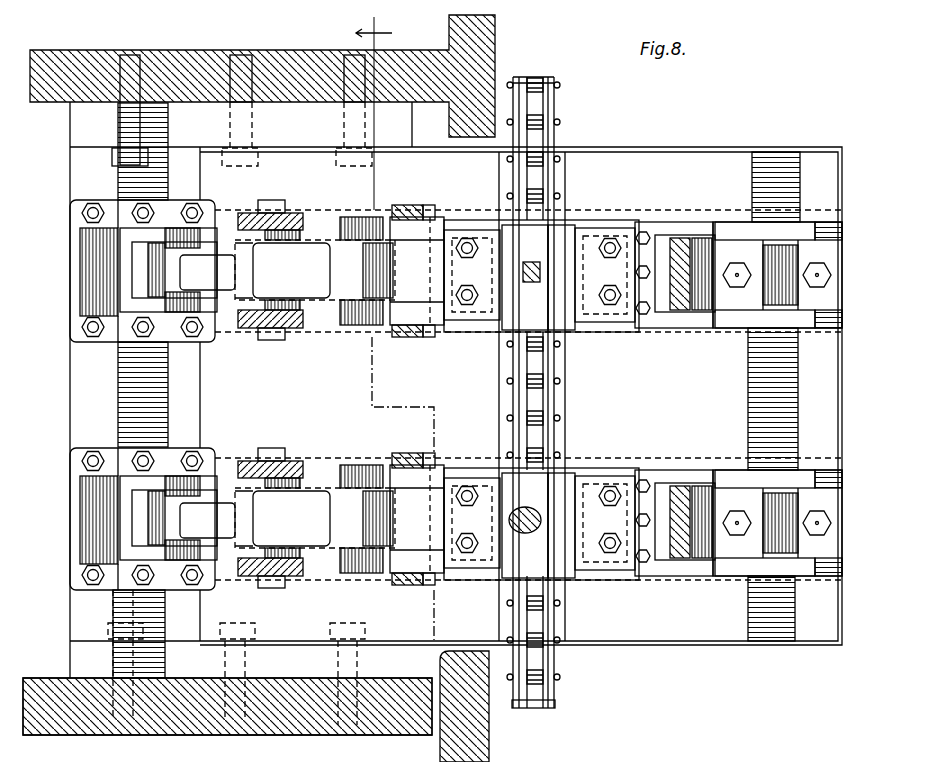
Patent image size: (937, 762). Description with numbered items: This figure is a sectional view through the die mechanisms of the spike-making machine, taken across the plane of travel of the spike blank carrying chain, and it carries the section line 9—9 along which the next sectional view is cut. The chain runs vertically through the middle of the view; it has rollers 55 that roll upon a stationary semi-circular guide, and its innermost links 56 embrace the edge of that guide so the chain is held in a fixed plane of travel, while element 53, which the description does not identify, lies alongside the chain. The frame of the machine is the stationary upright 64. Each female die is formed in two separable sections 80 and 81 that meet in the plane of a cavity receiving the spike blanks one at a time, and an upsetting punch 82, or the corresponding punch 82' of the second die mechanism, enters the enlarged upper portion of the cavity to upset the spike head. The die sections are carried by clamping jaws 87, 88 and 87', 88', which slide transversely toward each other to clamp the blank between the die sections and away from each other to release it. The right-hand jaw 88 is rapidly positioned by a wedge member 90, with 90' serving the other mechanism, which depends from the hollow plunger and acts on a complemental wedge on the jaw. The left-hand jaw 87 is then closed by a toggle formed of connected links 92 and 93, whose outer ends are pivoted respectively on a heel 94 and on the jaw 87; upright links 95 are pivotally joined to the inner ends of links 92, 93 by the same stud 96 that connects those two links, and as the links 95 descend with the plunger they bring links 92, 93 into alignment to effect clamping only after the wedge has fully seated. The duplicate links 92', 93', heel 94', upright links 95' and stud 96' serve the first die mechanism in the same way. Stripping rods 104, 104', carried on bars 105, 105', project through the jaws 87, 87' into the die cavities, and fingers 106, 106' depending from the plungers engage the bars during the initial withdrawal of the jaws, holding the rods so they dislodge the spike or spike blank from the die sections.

The section line 9— 9 is at (382, 113).
The chain guide 53 is at (560, 225).
The rollers 55 is at (536, 92).
The innermost links 56 is at (548, 700).
The stationary upright 64 is at (66, 725).
The female die section 80 is at (541, 276).
The female die section 81 is at (561, 277).
The upsetting punch 82 is at (539, 298).
The upsetting punch 82' is at (539, 544).
The clamping jaw 87 is at (412, 397).
The clamping jaw 87' is at (429, 615).
The clamping jaw 88 is at (670, 294).
The clamping jaw 88' is at (665, 500).
The wedge member 90 is at (689, 302).
The wedge member 90' is at (686, 549).
The link 92 is at (181, 301).
The link 92' is at (183, 546).
The link 93 is at (315, 291).
The link 93' is at (315, 538).
The heel 94 is at (142, 293).
The heel 94' is at (142, 536).
The upright links 95 is at (277, 271).
The upright links 95' is at (279, 519).
The stud 96 is at (271, 287).
The stud 96' is at (271, 533).
The stripping rod 104 is at (521, 285).
The stripping rod 104' is at (498, 573).
The bar 105 is at (434, 292).
The bar 105' is at (435, 538).
The finger 106 is at (405, 278).
The finger 106' is at (409, 524).